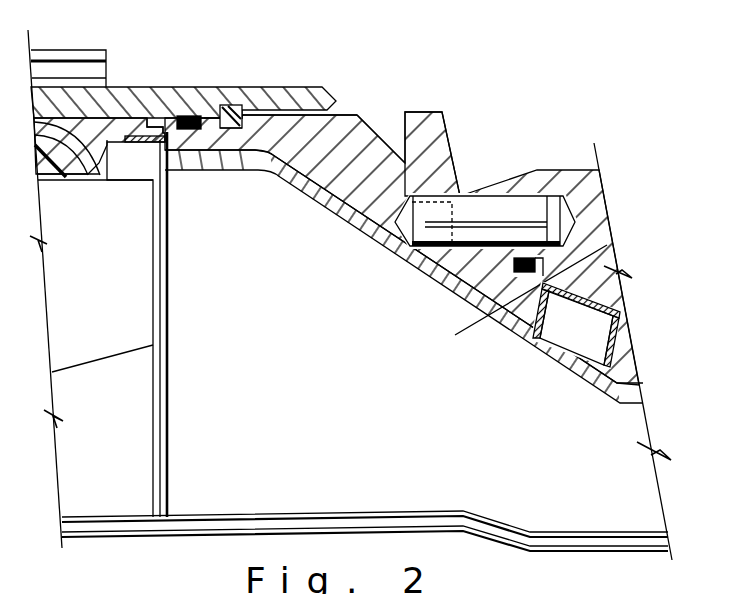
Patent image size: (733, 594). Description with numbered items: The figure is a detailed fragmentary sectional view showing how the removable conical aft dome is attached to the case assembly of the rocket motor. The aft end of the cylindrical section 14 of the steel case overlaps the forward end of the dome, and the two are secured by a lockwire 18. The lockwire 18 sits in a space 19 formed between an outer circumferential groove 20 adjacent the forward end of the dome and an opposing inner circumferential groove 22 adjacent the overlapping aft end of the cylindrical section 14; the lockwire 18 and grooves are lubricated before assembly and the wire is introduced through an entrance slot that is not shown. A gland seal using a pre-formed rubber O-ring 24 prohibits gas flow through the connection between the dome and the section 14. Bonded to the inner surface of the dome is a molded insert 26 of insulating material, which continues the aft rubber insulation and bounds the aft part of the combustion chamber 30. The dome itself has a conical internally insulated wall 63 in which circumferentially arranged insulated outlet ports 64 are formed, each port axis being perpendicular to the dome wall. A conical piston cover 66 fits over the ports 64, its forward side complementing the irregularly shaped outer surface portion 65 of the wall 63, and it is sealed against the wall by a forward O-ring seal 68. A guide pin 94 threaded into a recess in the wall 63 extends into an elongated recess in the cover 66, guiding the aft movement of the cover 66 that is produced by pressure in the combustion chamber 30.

The cylindrical section 14 is at (292, 86).
The lockwire 18 is at (230, 104).
The space 19 is at (216, 106).
The outer circumferential groove 20 is at (232, 129).
The inner circumferential groove 22 is at (241, 108).
The O-ring 24 is at (178, 113).
The molded insert 26 is at (357, 222).
The combustion chamber 30 is at (110, 299).
The conical internally insulated wall 63 is at (505, 250).
The insulated outlet port 64 is at (574, 325).
The outer surface portion 65 is at (548, 265).
The piston cover 66 is at (440, 132).
The forward O-ring seal 68 is at (475, 263).
The guide pin 94 is at (482, 212).